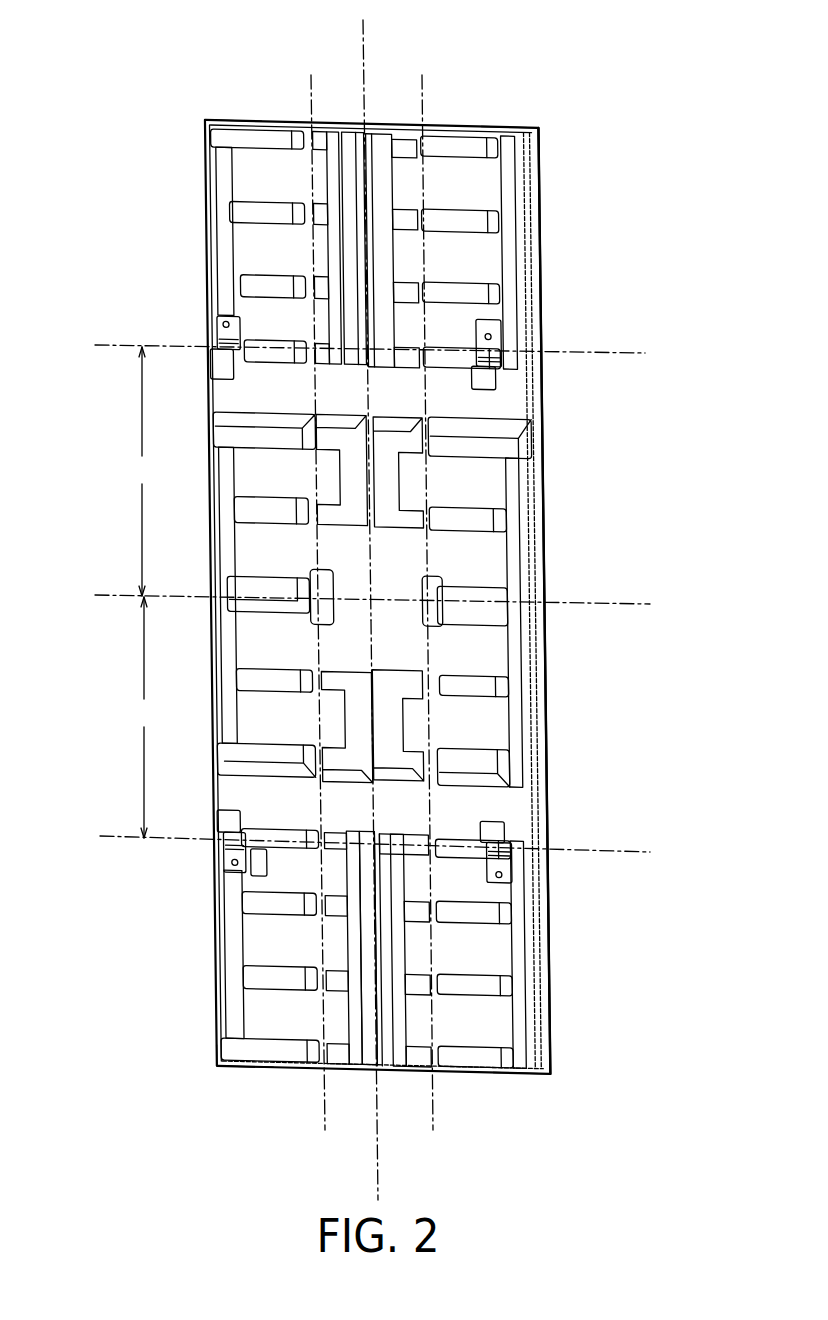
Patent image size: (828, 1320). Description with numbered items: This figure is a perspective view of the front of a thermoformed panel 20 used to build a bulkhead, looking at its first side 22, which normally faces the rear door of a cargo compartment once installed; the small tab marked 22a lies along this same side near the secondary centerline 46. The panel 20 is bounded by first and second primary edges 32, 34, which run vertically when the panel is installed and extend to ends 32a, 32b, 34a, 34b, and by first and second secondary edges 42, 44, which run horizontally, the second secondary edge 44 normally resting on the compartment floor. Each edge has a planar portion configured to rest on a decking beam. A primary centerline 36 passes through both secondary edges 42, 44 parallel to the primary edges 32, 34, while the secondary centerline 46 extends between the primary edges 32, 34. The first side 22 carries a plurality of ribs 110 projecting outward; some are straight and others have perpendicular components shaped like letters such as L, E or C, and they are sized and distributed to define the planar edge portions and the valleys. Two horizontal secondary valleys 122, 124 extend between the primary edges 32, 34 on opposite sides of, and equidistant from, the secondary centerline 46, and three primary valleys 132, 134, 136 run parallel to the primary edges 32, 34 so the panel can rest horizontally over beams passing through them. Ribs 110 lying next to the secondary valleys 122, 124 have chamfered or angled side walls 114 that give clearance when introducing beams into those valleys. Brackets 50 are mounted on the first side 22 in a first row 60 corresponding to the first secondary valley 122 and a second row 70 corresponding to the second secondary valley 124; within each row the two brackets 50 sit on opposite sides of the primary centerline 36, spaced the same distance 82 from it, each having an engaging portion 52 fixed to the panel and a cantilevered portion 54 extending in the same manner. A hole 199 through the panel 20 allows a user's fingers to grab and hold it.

The panel 20 is at (462, 182).
The first side 22 is at (465, 483).
The module tab 22a is at (485, 573).
The first primary edge 32 is at (208, 488).
The end of first primary edge 32a is at (208, 122).
The end of first primary edge 32b is at (213, 1070).
The second primary edge 34 is at (540, 545).
The end of second primary edge 34a is at (538, 130).
The end of second primary edge 34b is at (548, 1077).
The primary centerline 36 is at (366, 38).
The first secondary edge 42 is at (367, 147).
The second secondary edge 44 is at (378, 1085).
The secondary centerline 46 is at (620, 604).
The bracket 50 is at (216, 333).
The engaging portion 52 is at (233, 317).
The cantilevered portion 54 is at (210, 366).
The first row of brackets 60 is at (247, 350).
The second row of brackets 70 is at (243, 850).
The distance 82 is at (143, 592).
The rib 110 is at (213, 670).
The chamfered or angled side wall 114 is at (210, 402).
The first secondary valley 122 is at (512, 398).
The second secondary valley 124 is at (500, 808).
The primary valley 132 is at (363, 318).
The primary valley 134 is at (310, 290).
The primary valley 136 is at (422, 350).
The hole 199 is at (322, 620).